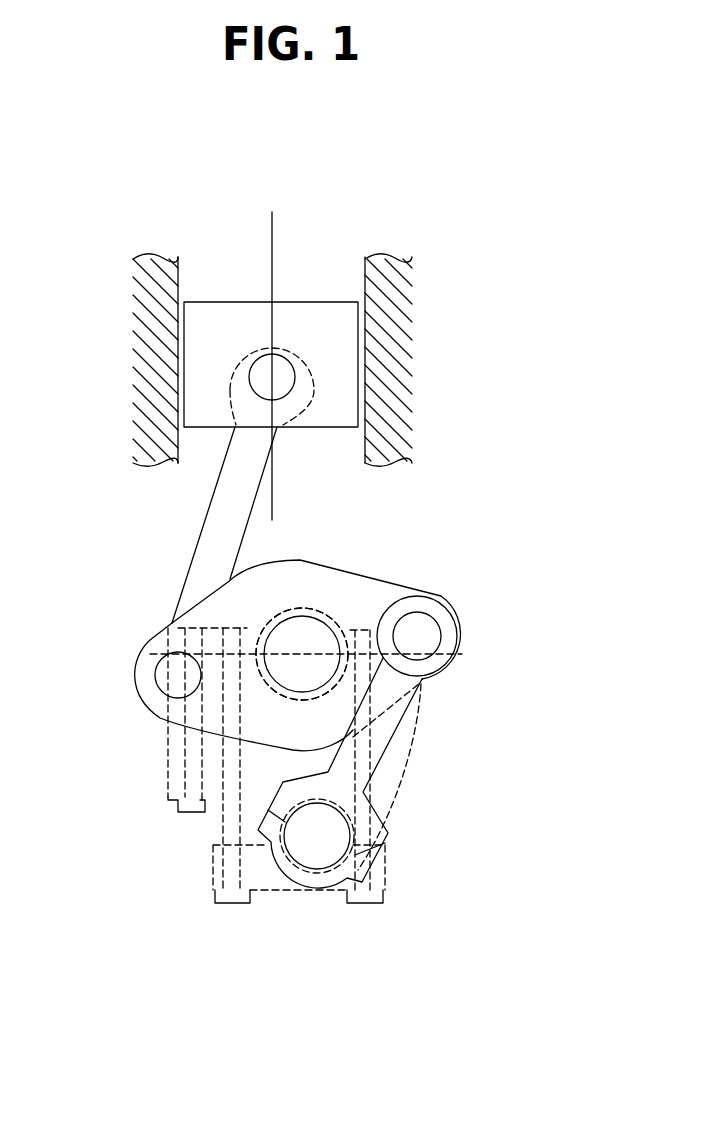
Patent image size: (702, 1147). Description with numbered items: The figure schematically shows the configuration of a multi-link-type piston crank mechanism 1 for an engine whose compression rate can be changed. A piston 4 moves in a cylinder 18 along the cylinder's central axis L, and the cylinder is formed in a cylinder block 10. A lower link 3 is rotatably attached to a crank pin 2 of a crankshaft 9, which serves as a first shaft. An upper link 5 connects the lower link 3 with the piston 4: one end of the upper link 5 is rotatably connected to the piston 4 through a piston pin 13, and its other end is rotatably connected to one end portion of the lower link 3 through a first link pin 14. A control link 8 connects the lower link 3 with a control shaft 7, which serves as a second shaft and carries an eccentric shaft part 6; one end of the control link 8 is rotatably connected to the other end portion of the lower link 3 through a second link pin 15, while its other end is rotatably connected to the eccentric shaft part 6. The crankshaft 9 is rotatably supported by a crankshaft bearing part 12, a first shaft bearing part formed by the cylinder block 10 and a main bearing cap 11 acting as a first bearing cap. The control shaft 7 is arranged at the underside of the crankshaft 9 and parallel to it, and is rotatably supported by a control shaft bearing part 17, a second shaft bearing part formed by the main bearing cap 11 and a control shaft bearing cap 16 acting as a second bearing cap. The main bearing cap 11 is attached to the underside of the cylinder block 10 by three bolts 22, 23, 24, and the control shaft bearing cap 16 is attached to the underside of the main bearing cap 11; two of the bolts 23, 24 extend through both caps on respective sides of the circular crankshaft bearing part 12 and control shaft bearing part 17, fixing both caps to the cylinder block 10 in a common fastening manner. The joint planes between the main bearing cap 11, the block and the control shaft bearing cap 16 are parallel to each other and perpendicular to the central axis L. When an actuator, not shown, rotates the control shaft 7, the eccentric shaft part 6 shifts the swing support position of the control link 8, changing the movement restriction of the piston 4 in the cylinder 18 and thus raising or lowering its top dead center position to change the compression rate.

The multi-link-type piston crank mechanism 1 is at (470, 523).
The crank pin 2 is at (327, 624).
The lower link 3 is at (327, 585).
The piston 4 is at (343, 325).
The upper link 5 is at (215, 538).
The eccentric shaft part 6 is at (338, 874).
The control shaft 7 is at (279, 864).
The control link 8 is at (383, 728).
The crankshaft 9 is at (267, 679).
The cylinder block 10 is at (387, 356).
The main bearing cap 11 is at (402, 773).
The crankshaft bearing part 12 is at (291, 638).
The piston pin 13 is at (262, 377).
The first link pin 14 is at (166, 676).
The second link pin 15 is at (425, 636).
The control shaft bearing cap 16 is at (385, 868).
The control shaft bearing part 17 is at (302, 876).
The cylinder 18 is at (180, 290).
The bolt 22 is at (190, 813).
The bolt 23 is at (230, 903).
The bolt 24 is at (378, 896).
The central axis L is at (273, 233).